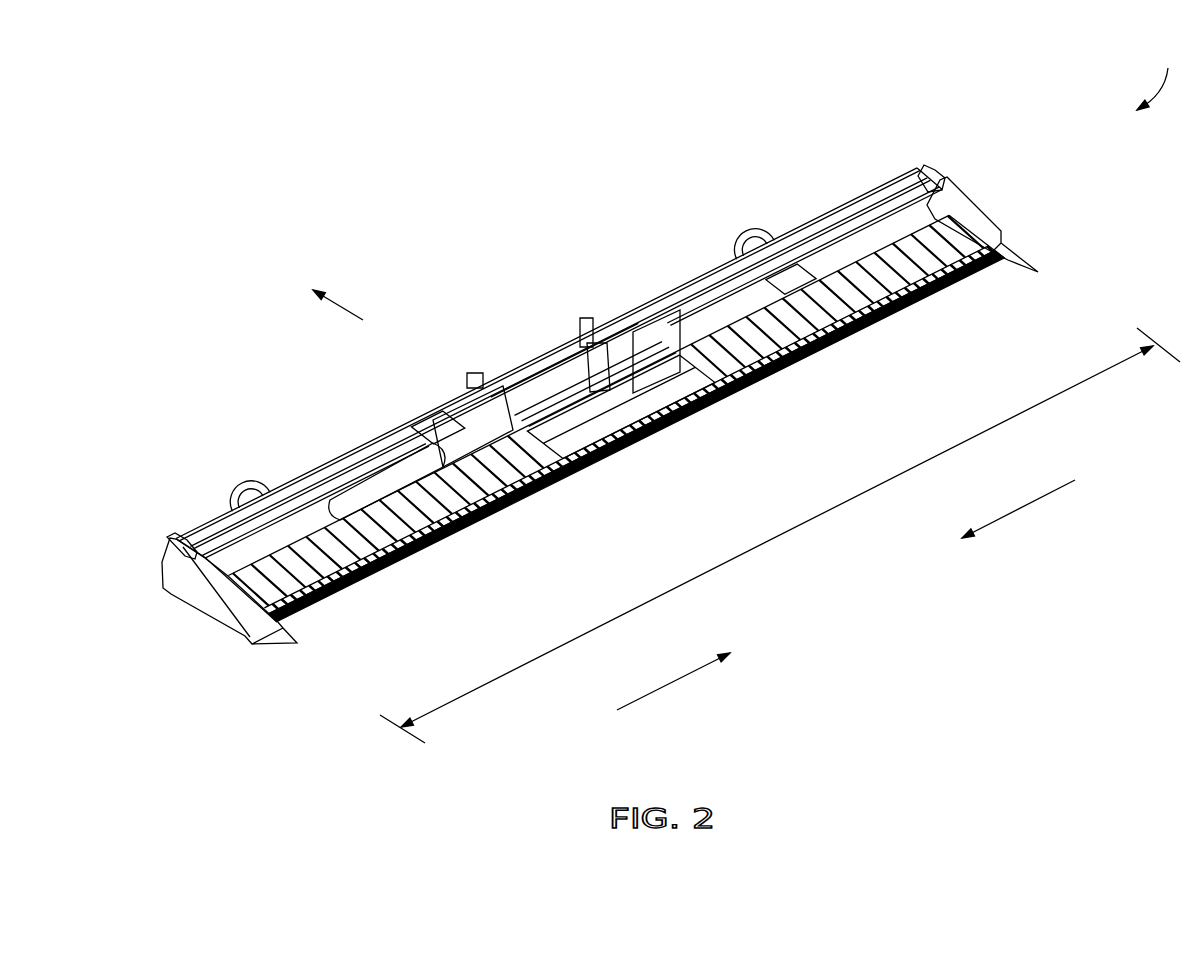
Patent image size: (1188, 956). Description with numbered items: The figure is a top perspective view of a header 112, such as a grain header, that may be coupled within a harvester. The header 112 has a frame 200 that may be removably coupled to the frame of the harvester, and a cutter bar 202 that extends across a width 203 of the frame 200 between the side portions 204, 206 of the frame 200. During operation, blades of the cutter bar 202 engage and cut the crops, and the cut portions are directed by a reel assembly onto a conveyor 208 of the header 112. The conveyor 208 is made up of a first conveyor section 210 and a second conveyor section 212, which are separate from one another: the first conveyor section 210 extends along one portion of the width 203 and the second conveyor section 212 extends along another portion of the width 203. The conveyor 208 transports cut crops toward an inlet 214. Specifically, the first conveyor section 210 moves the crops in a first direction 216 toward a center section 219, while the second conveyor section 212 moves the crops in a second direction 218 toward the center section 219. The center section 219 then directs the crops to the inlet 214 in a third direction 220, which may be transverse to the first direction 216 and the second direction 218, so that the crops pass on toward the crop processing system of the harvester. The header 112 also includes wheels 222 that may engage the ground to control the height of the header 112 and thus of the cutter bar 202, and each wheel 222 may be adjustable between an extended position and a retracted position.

The header 112 is at (1161, 73).
The frame 200 is at (538, 332).
The cutter bar 202 is at (497, 522).
The width 203 is at (780, 535).
The side portion 204 is at (977, 202).
The side portion 206 is at (232, 612).
The conveyor 208 is at (537, 457).
The first conveyor section 210 is at (410, 562).
The second conveyor section 212 is at (793, 328).
The inlet 214 is at (545, 395).
The first direction 216 is at (672, 690).
The second direction 218 is at (1022, 510).
The center section 219 is at (593, 417).
The third direction 220 is at (345, 306).
The wheels 222 is at (252, 482).